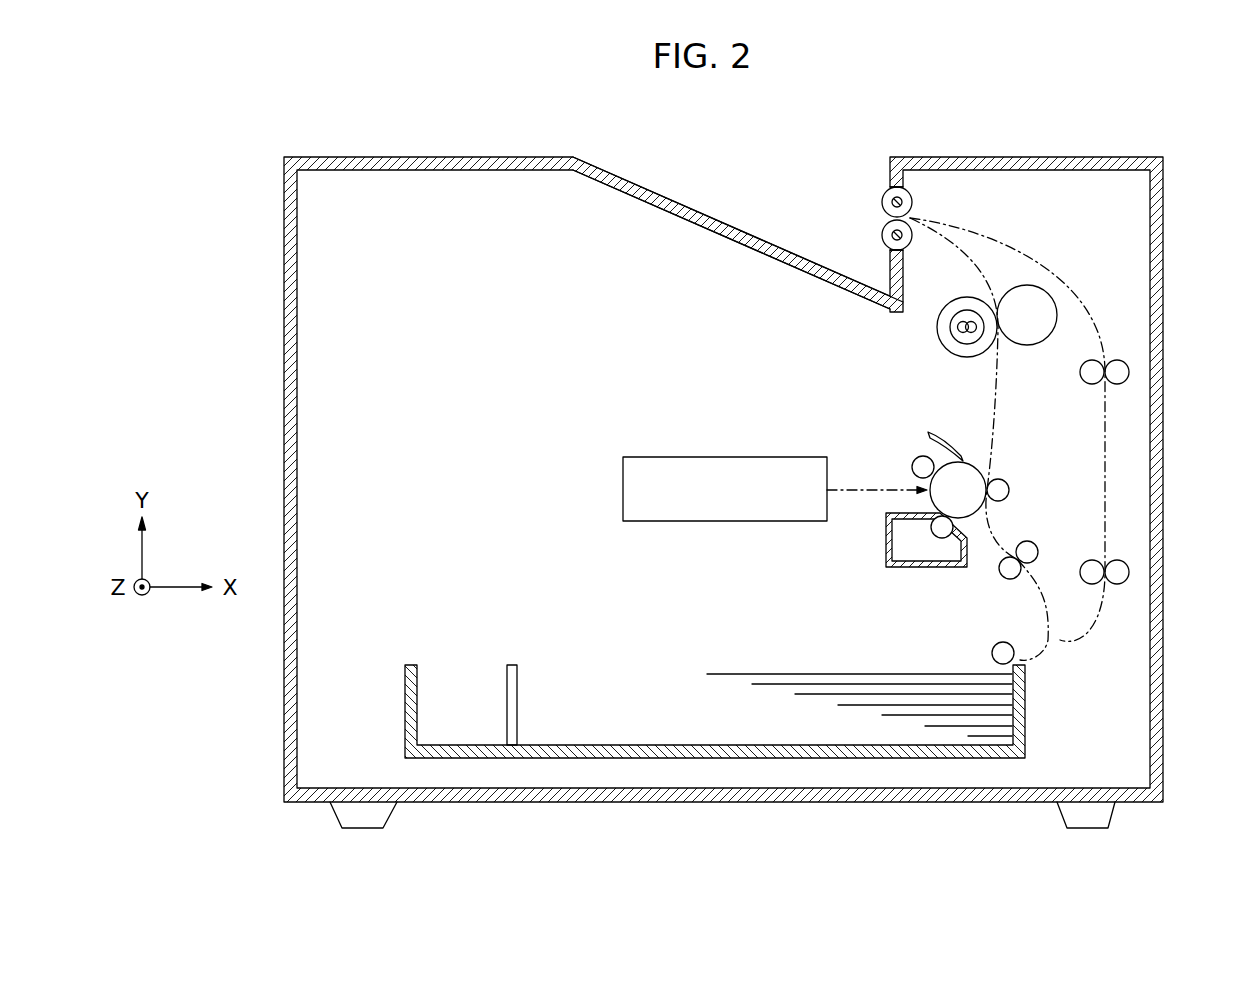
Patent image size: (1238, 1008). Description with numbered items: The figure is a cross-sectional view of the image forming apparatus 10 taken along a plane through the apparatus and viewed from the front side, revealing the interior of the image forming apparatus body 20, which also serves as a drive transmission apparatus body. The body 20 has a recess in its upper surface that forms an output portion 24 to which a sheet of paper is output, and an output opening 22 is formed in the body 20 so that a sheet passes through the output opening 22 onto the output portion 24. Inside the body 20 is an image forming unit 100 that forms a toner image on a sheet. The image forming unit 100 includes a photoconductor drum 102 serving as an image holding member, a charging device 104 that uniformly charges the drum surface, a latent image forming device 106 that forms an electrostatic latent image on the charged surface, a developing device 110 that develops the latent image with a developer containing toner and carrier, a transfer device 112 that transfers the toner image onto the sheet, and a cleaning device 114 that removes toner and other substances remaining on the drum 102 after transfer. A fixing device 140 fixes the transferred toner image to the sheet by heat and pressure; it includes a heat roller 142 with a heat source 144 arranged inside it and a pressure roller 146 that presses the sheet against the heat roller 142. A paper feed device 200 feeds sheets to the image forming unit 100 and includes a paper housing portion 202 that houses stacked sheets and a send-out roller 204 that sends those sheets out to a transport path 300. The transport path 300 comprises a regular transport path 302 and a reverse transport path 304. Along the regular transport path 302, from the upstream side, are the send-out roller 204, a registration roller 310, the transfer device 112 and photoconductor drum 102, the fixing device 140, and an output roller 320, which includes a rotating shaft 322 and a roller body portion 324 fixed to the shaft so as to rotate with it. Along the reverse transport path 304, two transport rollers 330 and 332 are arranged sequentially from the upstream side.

The image forming apparatus 10 is at (1014, 130).
The image forming apparatus body 20 is at (1163, 188).
The output opening 22 is at (901, 186).
The output portion 24 is at (683, 202).
The image forming unit 100 is at (951, 499).
The photoconductor drum 102 is at (965, 462).
The charging device 104 is at (914, 459).
The latent image forming device 106 is at (682, 457).
The developing device 110 is at (922, 567).
The transfer device 112 is at (1010, 490).
The cleaning device 114 is at (938, 430).
The fixing device 140 is at (949, 328).
The heat roller 142 is at (946, 349).
The heat source 144 is at (950, 333).
The pressure roller 146 is at (1035, 345).
The paper feed device 200 is at (750, 667).
The paper housing portion 202 is at (406, 664).
The send-out roller 204 is at (992, 651).
The transport path 300 is at (1004, 425).
The regular transport path 302 is at (1045, 606).
The reverse transport path 304 is at (1108, 447).
The registration roller 310 is at (1038, 550).
The output roller 320 is at (874, 197).
The rotating shaft 322 is at (912, 202).
The roller body portion 324 is at (886, 192).
The transport roller 330 is at (1130, 372).
The transport roller 332 is at (1130, 572).